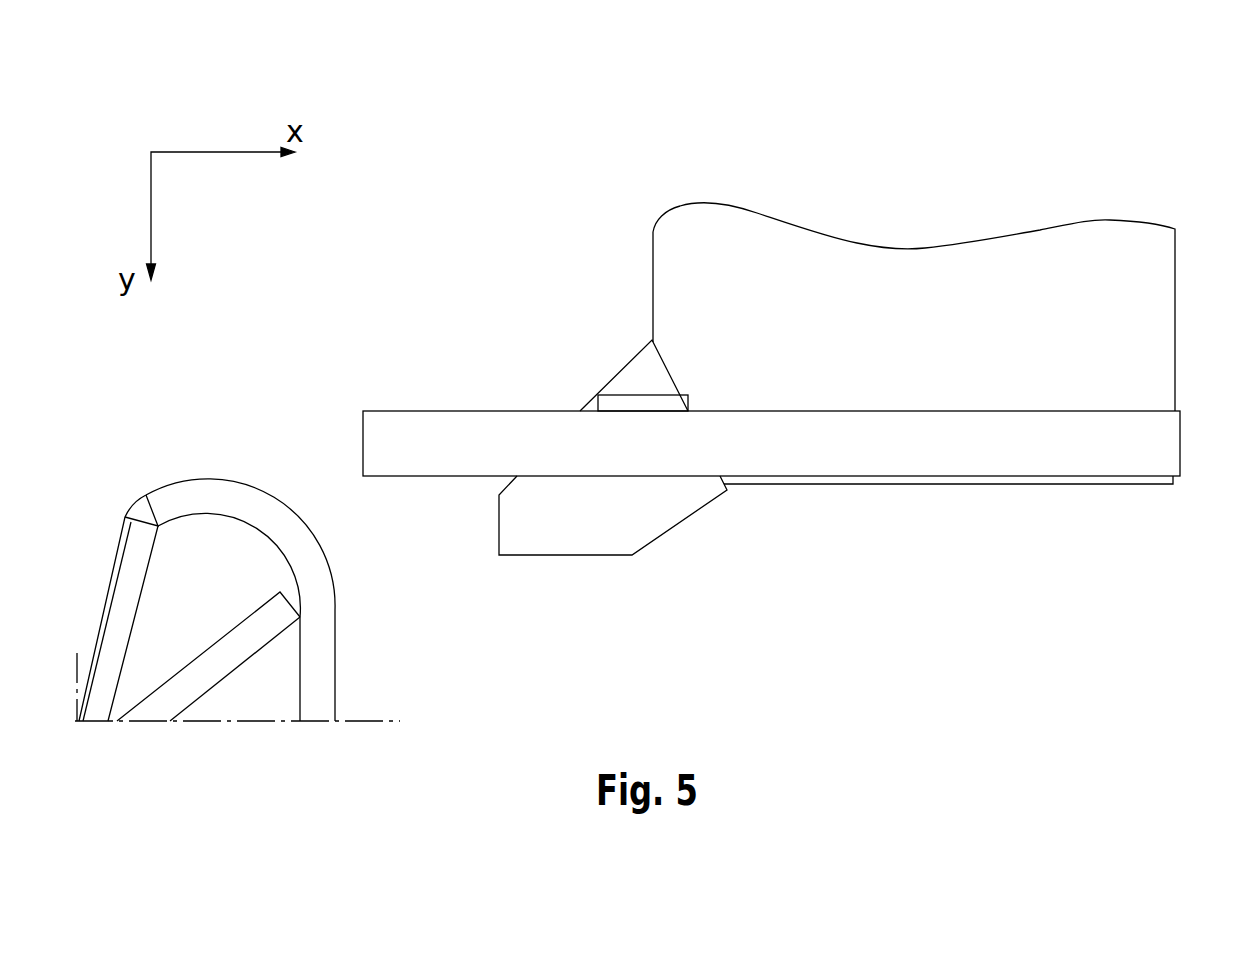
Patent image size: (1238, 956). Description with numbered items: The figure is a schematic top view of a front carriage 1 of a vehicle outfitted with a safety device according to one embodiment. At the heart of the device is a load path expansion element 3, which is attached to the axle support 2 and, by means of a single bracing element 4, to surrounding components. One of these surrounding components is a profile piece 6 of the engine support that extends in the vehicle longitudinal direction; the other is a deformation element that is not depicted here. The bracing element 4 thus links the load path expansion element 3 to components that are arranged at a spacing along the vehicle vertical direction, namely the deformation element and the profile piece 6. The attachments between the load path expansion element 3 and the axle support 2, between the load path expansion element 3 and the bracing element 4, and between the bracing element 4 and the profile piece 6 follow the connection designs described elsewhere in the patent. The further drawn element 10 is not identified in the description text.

The front carriage 1 is at (1181, 142).
The axle support 2 is at (1013, 262).
The load path expansion element 3 is at (593, 532).
The bracing element 4 is at (677, 407).
The profile piece 6 is at (968, 455).
The bent part 10 is at (315, 643).